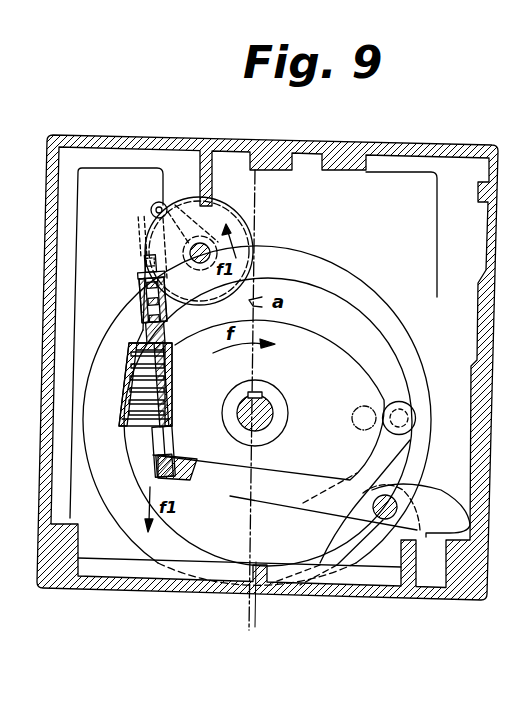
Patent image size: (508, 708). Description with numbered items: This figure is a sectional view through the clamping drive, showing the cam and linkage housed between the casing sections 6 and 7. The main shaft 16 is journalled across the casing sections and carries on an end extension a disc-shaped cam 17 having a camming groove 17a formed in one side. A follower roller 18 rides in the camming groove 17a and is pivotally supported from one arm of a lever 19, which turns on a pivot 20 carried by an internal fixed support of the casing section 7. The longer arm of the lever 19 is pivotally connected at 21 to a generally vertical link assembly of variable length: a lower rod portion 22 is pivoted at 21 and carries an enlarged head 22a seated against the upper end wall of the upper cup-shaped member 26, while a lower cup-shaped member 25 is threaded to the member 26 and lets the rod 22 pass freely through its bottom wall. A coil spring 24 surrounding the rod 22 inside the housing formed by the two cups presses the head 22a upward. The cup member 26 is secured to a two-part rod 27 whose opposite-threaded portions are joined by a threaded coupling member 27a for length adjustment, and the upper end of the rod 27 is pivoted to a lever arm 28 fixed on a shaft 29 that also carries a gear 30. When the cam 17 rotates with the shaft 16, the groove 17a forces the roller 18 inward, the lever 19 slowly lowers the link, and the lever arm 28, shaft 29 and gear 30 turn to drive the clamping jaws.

The casing section 6 is at (431, 143).
The casing section 7 is at (390, 208).
The main shaft 16 is at (263, 420).
The disc-shaped cam 17 is at (327, 262).
The camming groove 17a is at (348, 330).
The follower roller 18 is at (411, 397).
The lever 19 is at (301, 490).
The pivot 20 is at (388, 496).
The pivotal connection 21 is at (133, 462).
The lower rod portion 22 is at (140, 442).
The enlarged head 22a is at (133, 350).
The coil spring 24 is at (158, 408).
The lower cup-shaped member 25 is at (127, 410).
The upper cup-shaped member 26 is at (172, 367).
The two-part rod 27 is at (150, 219).
The threaded coupling member 27a is at (128, 310).
The lever arm 28 is at (160, 202).
The shaft 29 is at (190, 248).
The gear 30 is at (240, 205).